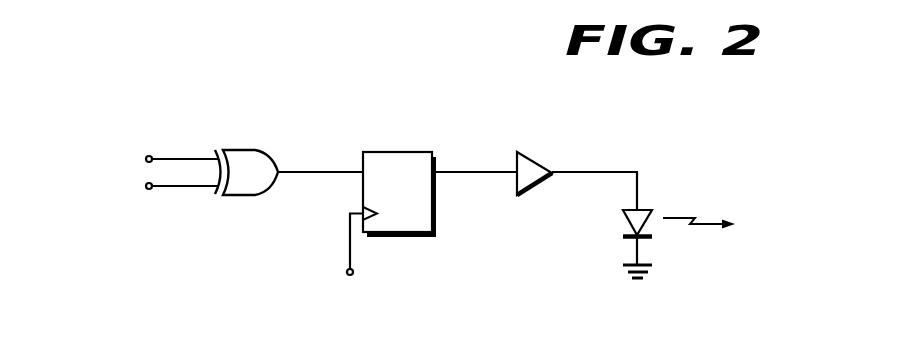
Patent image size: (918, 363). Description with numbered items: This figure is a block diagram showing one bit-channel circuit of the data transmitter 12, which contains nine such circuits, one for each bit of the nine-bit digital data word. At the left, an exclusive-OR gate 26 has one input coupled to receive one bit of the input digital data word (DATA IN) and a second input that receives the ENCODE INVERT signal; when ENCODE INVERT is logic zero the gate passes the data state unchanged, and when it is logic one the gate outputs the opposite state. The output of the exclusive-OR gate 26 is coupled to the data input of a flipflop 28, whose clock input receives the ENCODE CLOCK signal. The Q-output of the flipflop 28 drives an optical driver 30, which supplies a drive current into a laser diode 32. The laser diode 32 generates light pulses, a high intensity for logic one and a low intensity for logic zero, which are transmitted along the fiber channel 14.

The data transmitter 12 is at (476, 67).
The fiber channel 14 is at (776, 227).
The exclusive-OR gate 26 is at (255, 150).
The flipflop 28 is at (404, 150).
The optical driver 30 is at (538, 157).
The laser diode 32 is at (620, 228).